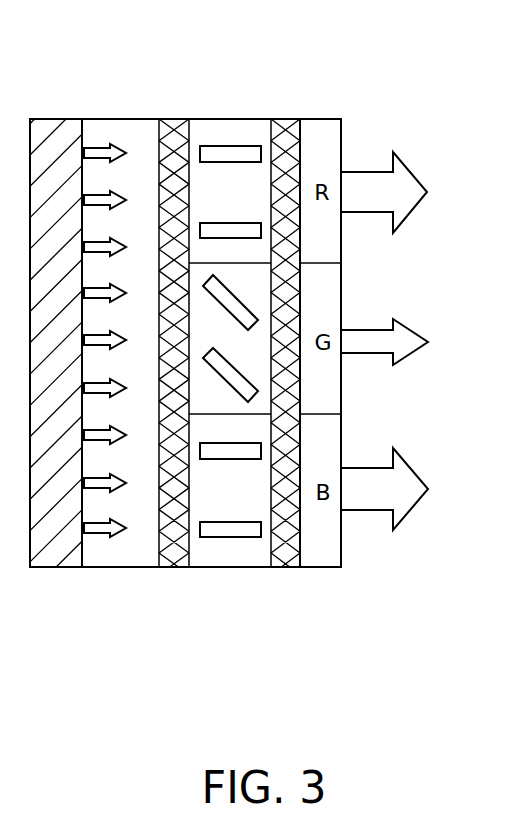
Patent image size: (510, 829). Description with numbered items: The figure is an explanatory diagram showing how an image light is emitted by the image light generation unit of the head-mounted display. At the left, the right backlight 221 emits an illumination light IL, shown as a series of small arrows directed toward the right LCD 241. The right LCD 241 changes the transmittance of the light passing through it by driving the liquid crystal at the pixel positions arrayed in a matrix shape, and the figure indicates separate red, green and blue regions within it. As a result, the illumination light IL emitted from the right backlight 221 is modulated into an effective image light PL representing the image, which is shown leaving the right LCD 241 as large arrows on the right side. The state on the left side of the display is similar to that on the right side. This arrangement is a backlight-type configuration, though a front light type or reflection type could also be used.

The illumination light IL is at (102, 147).
The image light PL is at (436, 128).
The right backlight 221 is at (57, 567).
The right LCD 241 is at (165, 592).